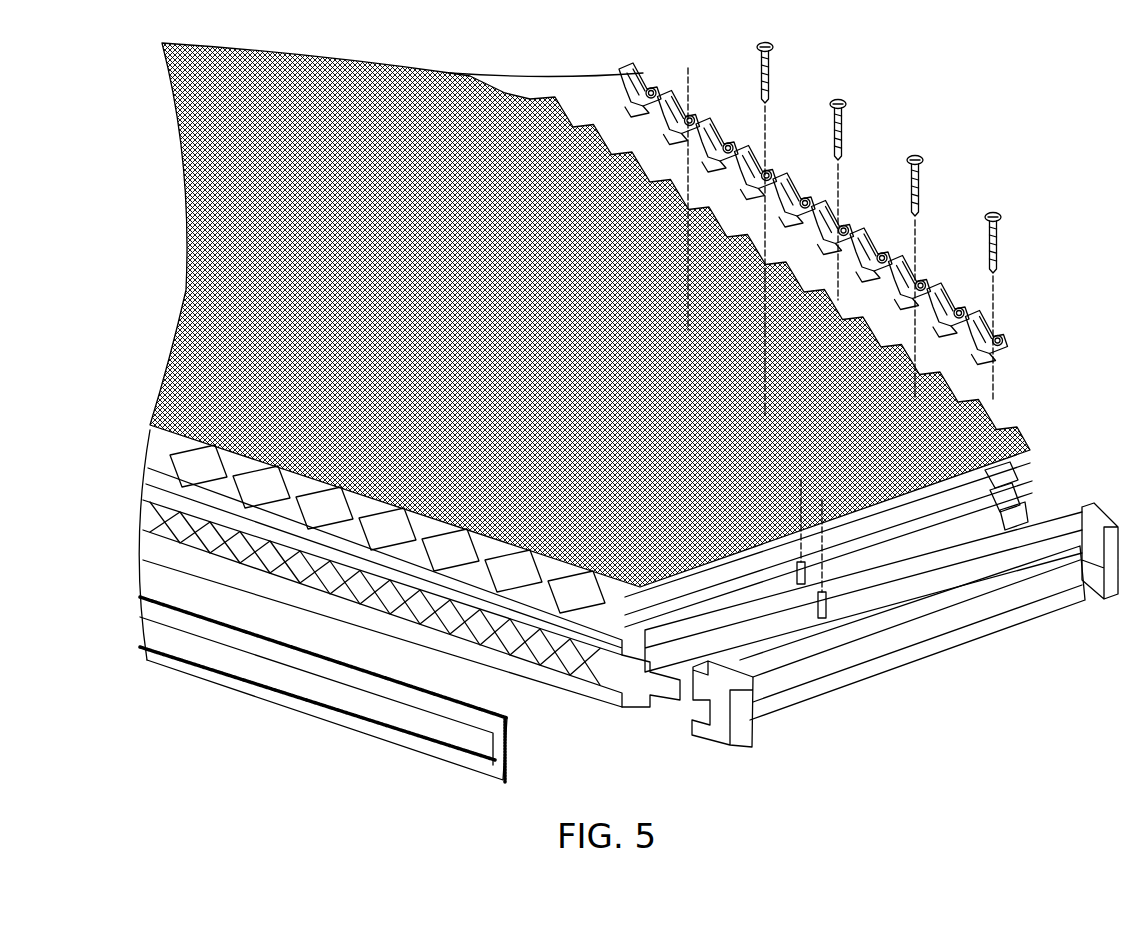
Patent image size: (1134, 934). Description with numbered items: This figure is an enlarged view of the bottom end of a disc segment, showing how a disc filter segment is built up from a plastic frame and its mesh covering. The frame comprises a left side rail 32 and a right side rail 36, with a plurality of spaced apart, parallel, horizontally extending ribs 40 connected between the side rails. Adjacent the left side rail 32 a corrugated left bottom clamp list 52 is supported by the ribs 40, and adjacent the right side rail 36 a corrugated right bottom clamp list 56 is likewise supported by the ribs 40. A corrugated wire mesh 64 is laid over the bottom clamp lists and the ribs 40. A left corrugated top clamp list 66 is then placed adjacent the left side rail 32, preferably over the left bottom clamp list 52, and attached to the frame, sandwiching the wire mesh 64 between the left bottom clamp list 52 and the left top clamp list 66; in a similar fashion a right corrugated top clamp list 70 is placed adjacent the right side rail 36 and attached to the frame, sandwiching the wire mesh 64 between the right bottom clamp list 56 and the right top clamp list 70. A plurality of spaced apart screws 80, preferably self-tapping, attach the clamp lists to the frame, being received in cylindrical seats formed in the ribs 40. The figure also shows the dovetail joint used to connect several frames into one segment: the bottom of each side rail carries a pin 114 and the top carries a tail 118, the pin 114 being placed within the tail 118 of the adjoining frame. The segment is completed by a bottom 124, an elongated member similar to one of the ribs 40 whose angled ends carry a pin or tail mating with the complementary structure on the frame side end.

The left side rail 32 is at (582, 697).
The right side rail 36 is at (1010, 476).
The ribs 40 is at (930, 560).
The left bottom clamp list 52 is at (573, 610).
The right bottom clamp list 56 is at (985, 493).
The wire mesh 64 is at (857, 334).
The left top clamp list 66 is at (540, 430).
The right top clamp list 70 is at (873, 236).
The screws 80 is at (1003, 235).
The pin 114 is at (1027, 512).
The tail 118 is at (705, 728).
The bottom 124 is at (838, 670).